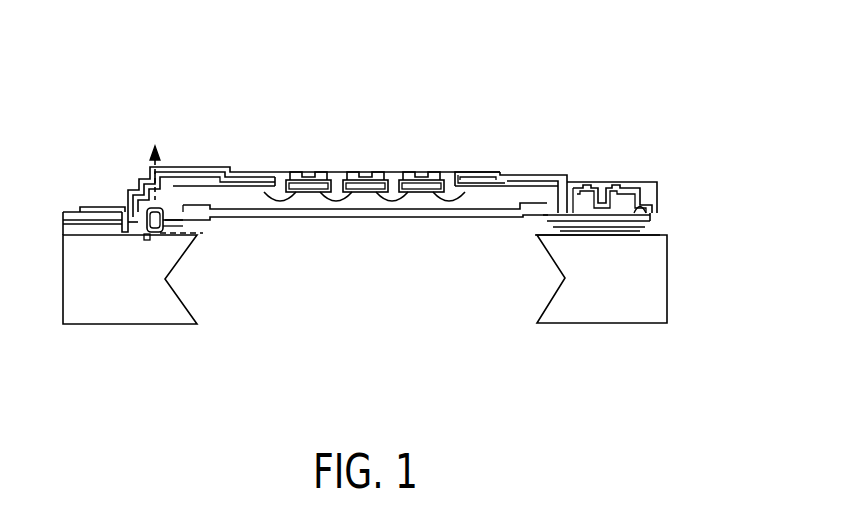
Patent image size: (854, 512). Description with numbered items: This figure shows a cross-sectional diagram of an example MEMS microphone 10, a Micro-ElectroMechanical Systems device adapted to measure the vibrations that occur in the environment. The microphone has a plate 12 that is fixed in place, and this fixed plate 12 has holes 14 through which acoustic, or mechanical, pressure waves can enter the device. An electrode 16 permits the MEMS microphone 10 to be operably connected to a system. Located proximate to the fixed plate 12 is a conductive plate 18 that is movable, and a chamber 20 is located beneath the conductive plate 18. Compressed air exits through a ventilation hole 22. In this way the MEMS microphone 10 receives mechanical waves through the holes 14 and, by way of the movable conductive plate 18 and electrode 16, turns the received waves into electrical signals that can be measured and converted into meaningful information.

The MEMS microphone 10 is at (398, 195).
The plate 12 is at (568, 173).
The holes 14 is at (280, 172).
The electrode 16 is at (482, 172).
The conductive plate 18 is at (622, 215).
The chamber 20 is at (386, 277).
The ventilation hole 22 is at (158, 185).